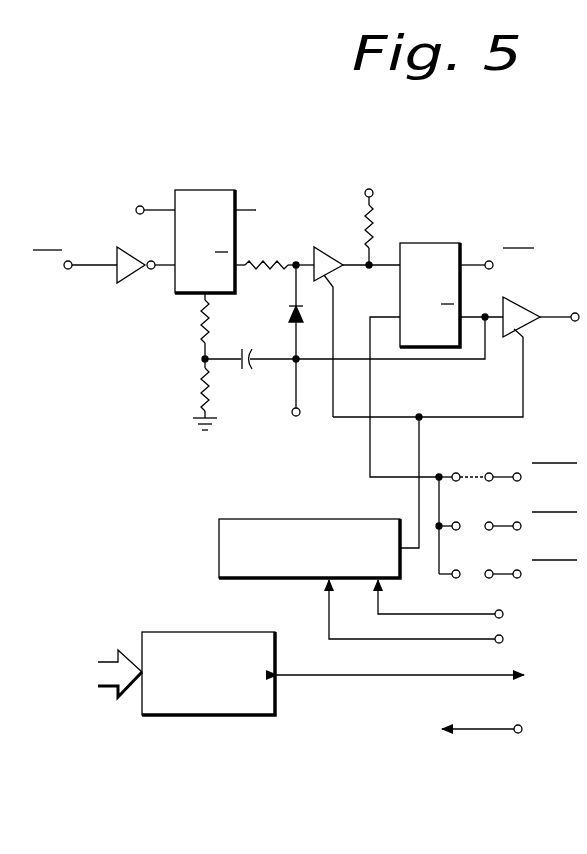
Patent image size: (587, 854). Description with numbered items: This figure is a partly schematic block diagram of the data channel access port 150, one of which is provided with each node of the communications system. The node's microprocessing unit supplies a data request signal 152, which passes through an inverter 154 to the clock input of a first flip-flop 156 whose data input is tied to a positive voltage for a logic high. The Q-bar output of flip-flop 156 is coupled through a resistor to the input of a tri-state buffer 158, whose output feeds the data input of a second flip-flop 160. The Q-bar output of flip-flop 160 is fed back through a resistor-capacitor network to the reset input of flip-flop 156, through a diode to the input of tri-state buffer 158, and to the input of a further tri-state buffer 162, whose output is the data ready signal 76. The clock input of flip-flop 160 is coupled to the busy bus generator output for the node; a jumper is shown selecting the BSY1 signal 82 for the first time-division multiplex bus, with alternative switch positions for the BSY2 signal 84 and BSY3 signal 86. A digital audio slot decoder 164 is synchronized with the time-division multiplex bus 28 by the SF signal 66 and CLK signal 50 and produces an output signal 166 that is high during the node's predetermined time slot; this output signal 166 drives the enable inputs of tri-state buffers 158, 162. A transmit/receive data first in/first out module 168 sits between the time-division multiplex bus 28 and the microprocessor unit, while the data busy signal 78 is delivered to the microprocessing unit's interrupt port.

The data channel access port 150 is at (358, 138).
The data request signal 152 is at (93, 267).
The inverter 154 is at (124, 280).
The flip-flop 156 is at (212, 191).
The tri-state buffer 158 is at (325, 247).
The flip-flop 160 is at (450, 244).
The tri-state buffer 162 is at (509, 337).
The data ready signal 76 is at (556, 320).
The BSY1 signal 82 is at (500, 475).
The BSY2 switch 84 is at (500, 524).
The BSY3 switch 86 is at (500, 572).
The digital audio slot decoder 164 is at (232, 580).
The output signal 166 is at (419, 497).
The transmit/receive data first in/first out module 168 is at (262, 632).
The SF signal 66 is at (450, 612).
The CLK signal 50 is at (460, 642).
The time-division multiplex bus 28 is at (424, 684).
The data busy signal 78 is at (389, 731).